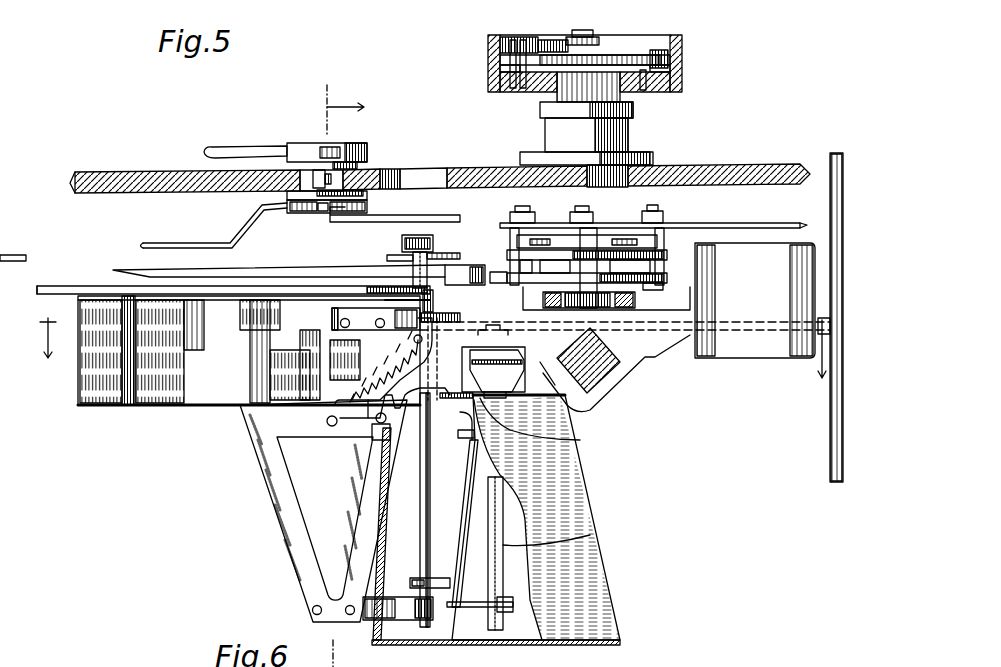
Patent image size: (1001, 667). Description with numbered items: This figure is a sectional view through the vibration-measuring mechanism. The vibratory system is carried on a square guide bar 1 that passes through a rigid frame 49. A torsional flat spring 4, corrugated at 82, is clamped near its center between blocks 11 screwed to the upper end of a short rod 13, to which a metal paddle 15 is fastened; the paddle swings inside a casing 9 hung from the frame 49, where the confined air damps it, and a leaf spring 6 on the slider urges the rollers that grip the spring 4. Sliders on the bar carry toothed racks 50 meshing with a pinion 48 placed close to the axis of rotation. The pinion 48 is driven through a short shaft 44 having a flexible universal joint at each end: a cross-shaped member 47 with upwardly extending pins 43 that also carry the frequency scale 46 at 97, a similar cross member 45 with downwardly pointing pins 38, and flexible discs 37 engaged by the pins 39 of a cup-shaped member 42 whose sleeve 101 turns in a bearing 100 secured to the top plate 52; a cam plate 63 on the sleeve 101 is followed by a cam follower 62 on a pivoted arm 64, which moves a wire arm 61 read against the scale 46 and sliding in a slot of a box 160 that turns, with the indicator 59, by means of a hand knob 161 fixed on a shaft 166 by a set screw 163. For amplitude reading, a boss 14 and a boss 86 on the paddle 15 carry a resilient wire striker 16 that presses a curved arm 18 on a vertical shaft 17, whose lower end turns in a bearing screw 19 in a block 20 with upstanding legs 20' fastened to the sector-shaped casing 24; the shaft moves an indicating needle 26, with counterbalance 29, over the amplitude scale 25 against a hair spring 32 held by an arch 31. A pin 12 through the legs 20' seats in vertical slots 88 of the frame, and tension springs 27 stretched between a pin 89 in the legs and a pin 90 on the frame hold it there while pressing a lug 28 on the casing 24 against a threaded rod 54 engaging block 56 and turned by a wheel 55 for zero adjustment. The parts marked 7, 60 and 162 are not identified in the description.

The guide bar 1 is at (598, 370).
The torsional flat spring 4 is at (518, 366).
The leaf spring 6 is at (442, 353).
The section line 7 is at (349, 94).
The casing 9 is at (600, 580).
The blocks 11 is at (512, 352).
The pin 12 is at (378, 424).
The short rod 13 is at (510, 336).
The protruding boss 14 is at (453, 422).
The paddle 15 is at (566, 532).
The striker 16 is at (462, 500).
The vertical shaft 17 is at (438, 455).
The angular arm 18 is at (435, 578).
The bearing screw 19 is at (430, 645).
The block 20 is at (398, 632).
The upstanding legs 20' is at (323, 511).
The sector shape casing 24 is at (249, 350).
The amplitude scale 25 is at (62, 286).
The indicating needle 26 is at (260, 268).
The tension springs 27 is at (358, 392).
The lug 28 is at (332, 318).
The counterbalance 29 is at (484, 285).
The arch 31 is at (402, 243).
The hair spring 32 is at (440, 258).
The flexible disc 37 is at (668, 62).
The downwardly pointing pins 38 is at (500, 45).
The upwardly extending pins 39 is at (530, 235).
The cup-shaped member 42 is at (500, 66).
The upwardly extending pins 43 is at (690, 165).
The short shaft 44 is at (610, 45).
The cross shaped member 45 is at (660, 40).
The frequency scale 46 is at (680, 240).
The cross member 47 is at (663, 283).
The pinion 48 is at (603, 312).
The rigid frame 49 is at (805, 358).
The toothed rack 50 is at (543, 298).
The top plate 52 is at (110, 173).
The rod 54 is at (765, 322).
The manually rotatable wheel 55 is at (830, 160).
The block 56 is at (445, 313).
The indicator 59 is at (172, 243).
The bracket 60 is at (325, 212).
The movable wire arm 61 is at (362, 222).
The cam follower 62 is at (488, 176).
The cam plate 63 is at (670, 162).
The arm 64 is at (505, 168).
The corrugation 82 is at (548, 425).
The boss 86 is at (470, 602).
The vertical slots 88 is at (385, 430).
The pin 89 is at (330, 423).
The pin 90 is at (410, 345).
The frequency scale connection 97 is at (655, 215).
The bearing 100 is at (545, 128).
The sleeve 101 is at (660, 165).
The box 160 is at (370, 195).
The hand knob 161 is at (365, 143).
The clamp arm 162 is at (222, 150).
The set screw 163 is at (356, 165).
The shaft 166 is at (318, 172).